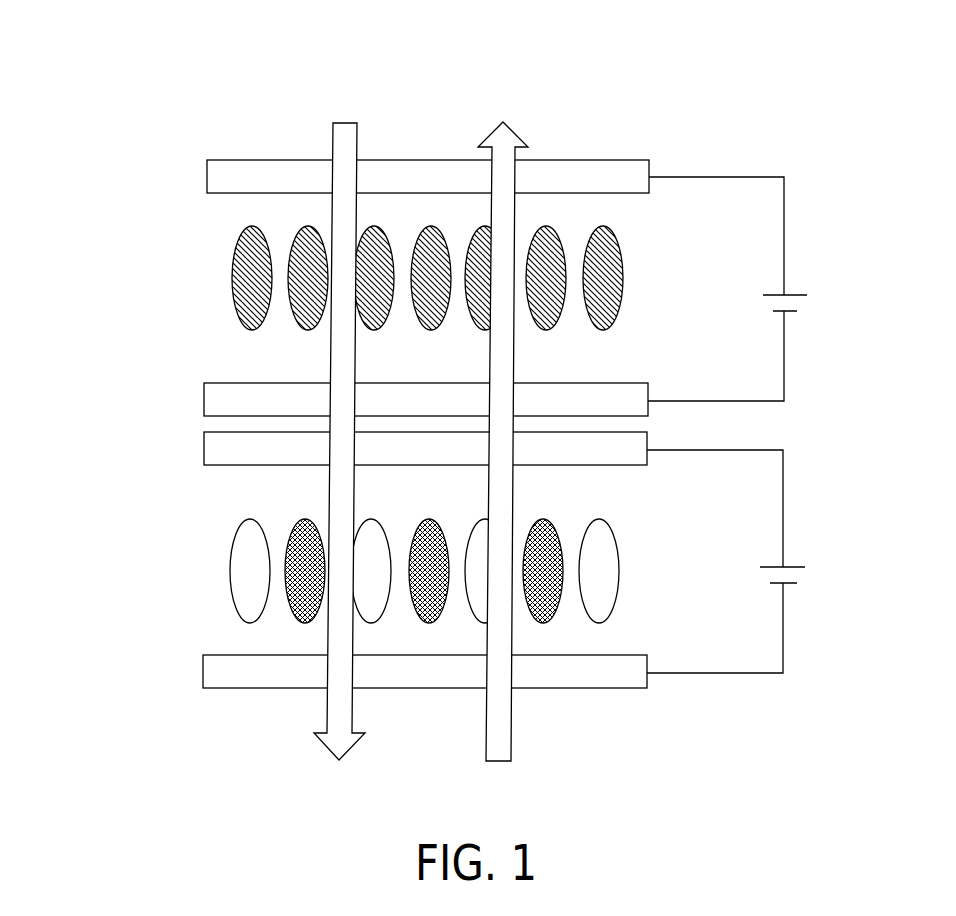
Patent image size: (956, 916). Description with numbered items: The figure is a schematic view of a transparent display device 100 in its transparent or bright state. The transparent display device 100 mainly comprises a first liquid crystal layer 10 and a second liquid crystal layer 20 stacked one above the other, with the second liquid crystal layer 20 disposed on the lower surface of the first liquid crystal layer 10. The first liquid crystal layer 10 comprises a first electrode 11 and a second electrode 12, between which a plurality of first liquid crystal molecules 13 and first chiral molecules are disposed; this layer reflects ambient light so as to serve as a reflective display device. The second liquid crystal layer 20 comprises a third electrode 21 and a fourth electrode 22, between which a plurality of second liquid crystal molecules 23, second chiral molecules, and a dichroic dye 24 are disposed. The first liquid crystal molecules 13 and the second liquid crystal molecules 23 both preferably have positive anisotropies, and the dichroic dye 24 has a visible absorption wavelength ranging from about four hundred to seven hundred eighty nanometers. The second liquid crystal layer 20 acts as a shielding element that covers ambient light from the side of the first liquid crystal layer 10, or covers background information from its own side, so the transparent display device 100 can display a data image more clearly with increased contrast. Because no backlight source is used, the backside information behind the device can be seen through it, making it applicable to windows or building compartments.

The transparent display device 100 is at (173, 122).
The first liquid crystal layer 10 is at (196, 168).
The first electrode 11 is at (613, 173).
The second electrode 12 is at (637, 406).
The first liquid crystal molecules 13 is at (622, 270).
The second liquid crystal layer 20 is at (195, 440).
The third electrode 21 is at (215, 443).
The fourth electrode 22 is at (222, 680).
The second liquid crystal molecules 23 is at (612, 572).
The dichroic dye 24 is at (546, 602).